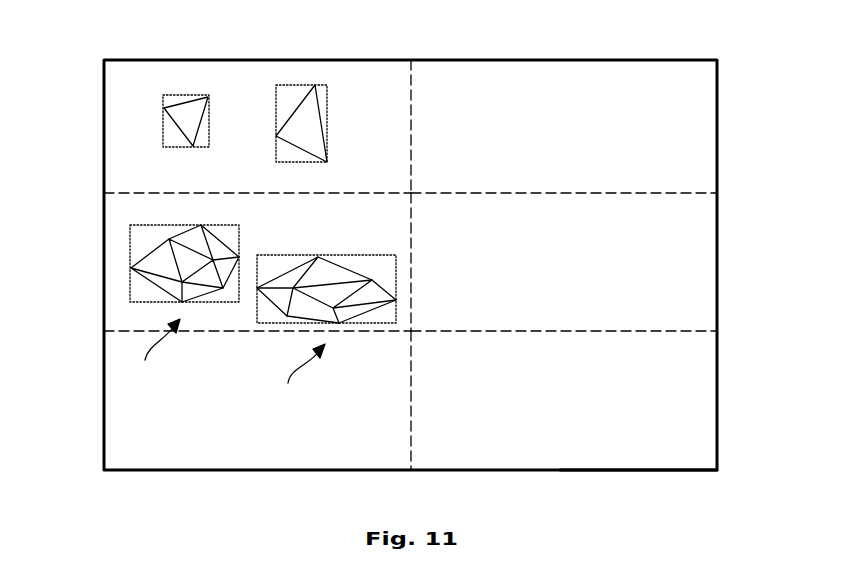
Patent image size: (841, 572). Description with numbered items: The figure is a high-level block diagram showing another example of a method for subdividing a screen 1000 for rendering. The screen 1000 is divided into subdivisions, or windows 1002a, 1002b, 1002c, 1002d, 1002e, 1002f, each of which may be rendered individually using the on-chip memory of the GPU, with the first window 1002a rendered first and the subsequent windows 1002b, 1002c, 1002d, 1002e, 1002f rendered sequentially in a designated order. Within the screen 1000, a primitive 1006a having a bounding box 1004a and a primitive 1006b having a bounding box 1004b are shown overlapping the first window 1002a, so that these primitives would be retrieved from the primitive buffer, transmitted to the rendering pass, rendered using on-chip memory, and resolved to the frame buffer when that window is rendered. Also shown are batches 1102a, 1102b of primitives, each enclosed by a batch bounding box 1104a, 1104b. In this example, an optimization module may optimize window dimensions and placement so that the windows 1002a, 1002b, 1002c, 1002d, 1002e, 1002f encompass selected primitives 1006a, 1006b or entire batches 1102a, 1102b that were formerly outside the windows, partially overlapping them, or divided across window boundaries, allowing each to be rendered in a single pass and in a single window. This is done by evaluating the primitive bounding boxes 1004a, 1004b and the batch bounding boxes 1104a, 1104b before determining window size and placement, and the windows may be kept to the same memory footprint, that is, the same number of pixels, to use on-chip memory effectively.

The screen 1000 is at (172, 59).
The window 1002a is at (225, 75).
The window 1002b is at (570, 70).
The window 1002c is at (120, 253).
The window 1002d is at (694, 253).
The window 1002e is at (278, 458).
The window 1002f is at (575, 457).
The bounding box 1004a is at (163, 132).
The bounding box 1004b is at (302, 83).
The primitive 1006a is at (187, 112).
The primitive 1006b is at (313, 105).
The batch of primitives 1102a is at (149, 350).
The batch of primitives 1102b is at (293, 374).
The batch bounding box 1104a is at (132, 288).
The batch bounding box 1104b is at (396, 284).